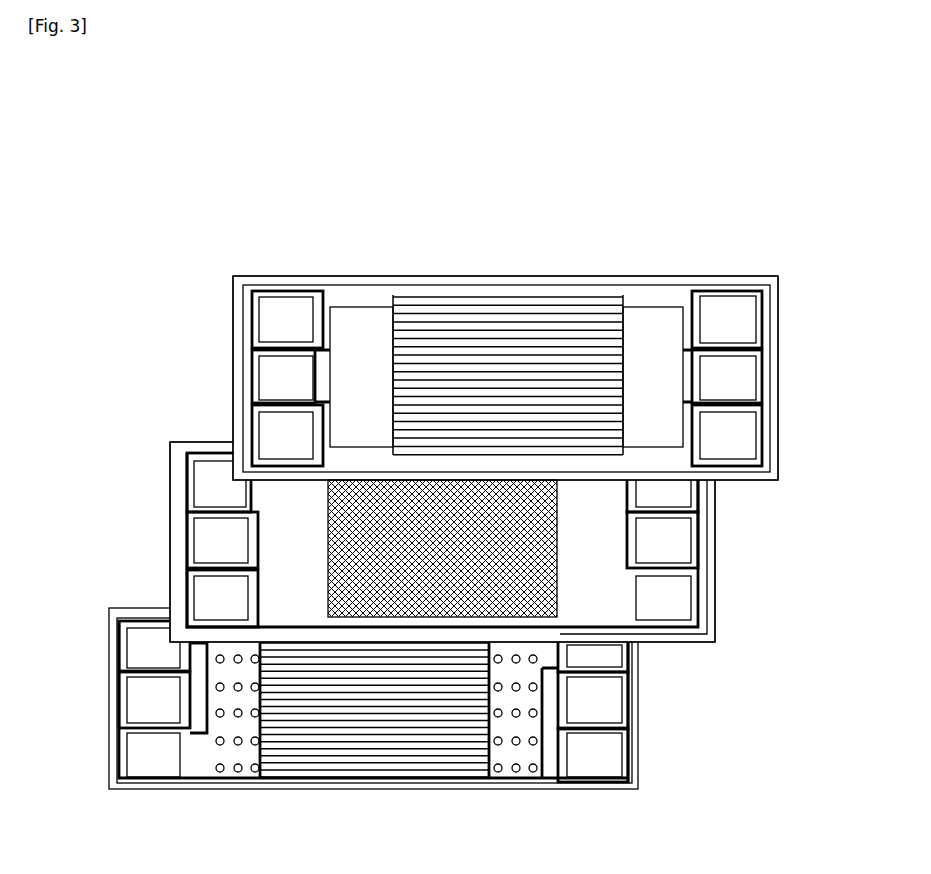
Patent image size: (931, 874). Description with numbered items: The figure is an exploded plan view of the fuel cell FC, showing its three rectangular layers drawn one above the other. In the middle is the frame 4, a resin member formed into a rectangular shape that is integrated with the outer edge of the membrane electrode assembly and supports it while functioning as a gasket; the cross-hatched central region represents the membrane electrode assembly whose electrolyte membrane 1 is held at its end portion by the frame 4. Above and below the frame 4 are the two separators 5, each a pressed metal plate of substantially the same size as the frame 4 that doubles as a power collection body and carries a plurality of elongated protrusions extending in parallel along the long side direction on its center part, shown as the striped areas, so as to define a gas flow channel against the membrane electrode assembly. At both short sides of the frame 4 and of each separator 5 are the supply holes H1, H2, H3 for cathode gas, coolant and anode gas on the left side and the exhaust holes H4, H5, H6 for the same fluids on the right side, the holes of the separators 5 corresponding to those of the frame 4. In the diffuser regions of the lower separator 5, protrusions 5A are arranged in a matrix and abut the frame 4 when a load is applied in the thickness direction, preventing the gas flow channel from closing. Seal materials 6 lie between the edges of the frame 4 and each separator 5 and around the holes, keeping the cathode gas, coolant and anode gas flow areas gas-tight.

The electrolyte membrane 1 is at (462, 618).
The frame 4 is at (582, 505).
The separator 5 is at (438, 262).
The protrusions 5A is at (220, 773).
The seal material 6 is at (347, 290).
The fuel cell FC is at (648, 263).
The supply hole H1 is at (273, 308).
The supply hole H2 is at (273, 371).
The supply hole H3 is at (273, 432).
The exhaust hole H4 is at (740, 322).
The exhaust hole H5 is at (740, 382).
The exhaust hole H6 is at (740, 450).